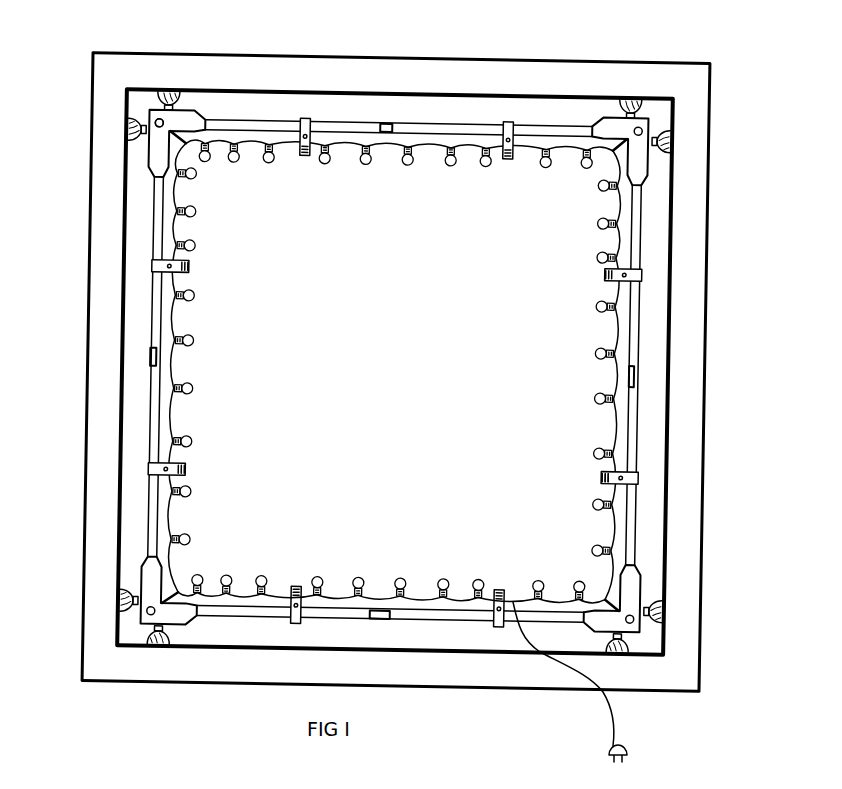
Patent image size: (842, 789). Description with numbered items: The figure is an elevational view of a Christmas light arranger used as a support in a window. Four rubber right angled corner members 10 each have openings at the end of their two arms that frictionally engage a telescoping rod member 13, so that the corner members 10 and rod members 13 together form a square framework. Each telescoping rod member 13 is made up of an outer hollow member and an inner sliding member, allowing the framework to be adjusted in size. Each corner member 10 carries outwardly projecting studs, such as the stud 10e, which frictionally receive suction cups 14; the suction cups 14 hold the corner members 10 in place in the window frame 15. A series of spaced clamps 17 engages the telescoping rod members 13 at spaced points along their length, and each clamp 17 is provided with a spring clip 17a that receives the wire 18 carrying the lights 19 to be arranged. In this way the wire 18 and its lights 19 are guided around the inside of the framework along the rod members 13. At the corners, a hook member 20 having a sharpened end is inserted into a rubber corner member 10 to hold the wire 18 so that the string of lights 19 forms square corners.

The corner member 10 is at (640, 130).
The stud 10e is at (159, 121).
The telescoping rod member 13 is at (247, 125).
The suction cup 14 is at (173, 89).
The window frame 15 is at (696, 338).
The clamp 17 is at (622, 476).
The spring clip 17a is at (600, 481).
The wire 18 is at (421, 597).
The lights 19 is at (477, 574).
The hook member 20 is at (637, 596).